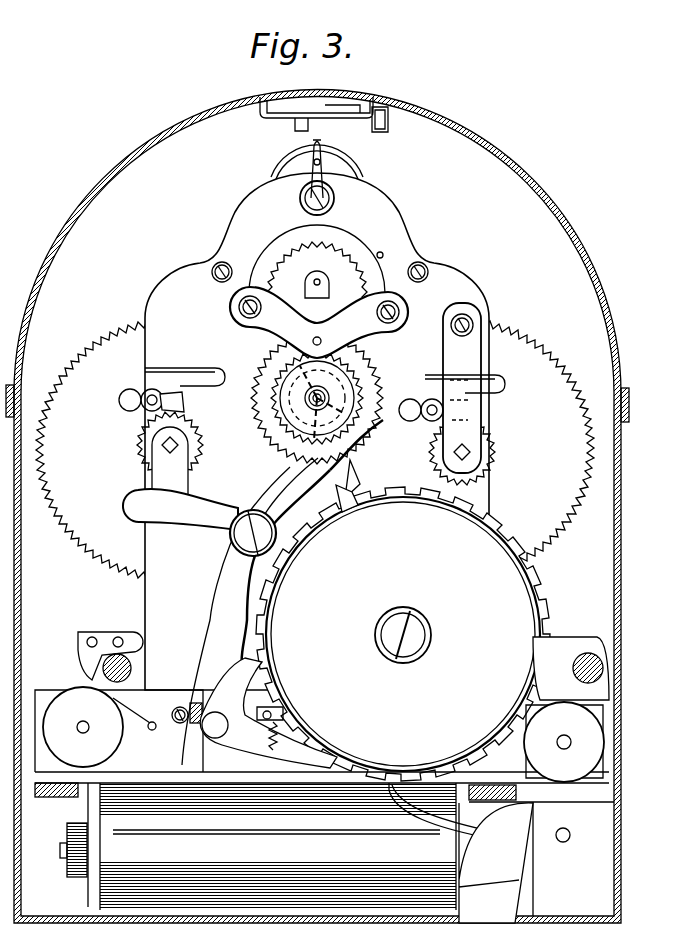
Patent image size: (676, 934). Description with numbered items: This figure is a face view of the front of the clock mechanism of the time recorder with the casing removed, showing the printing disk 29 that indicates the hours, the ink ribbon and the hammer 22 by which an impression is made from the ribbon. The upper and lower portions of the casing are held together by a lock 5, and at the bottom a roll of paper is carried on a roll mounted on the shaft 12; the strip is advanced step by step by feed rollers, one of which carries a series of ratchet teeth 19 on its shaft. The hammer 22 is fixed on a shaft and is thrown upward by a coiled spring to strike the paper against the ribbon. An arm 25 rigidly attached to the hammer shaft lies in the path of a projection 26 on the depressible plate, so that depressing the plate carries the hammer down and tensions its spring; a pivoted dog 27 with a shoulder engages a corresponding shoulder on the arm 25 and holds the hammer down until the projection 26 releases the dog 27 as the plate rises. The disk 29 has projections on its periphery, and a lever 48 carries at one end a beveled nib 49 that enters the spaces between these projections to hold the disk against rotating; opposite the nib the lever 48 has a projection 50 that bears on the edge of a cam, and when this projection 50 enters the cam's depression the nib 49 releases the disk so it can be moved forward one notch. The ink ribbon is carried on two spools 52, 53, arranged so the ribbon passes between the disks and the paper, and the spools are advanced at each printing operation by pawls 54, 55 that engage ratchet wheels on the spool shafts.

The lock 5 is at (355, 121).
The shaft 12 is at (67, 863).
The ratchet teeth 19 is at (67, 835).
The hammer 22 is at (437, 810).
The arm 25 is at (496, 863).
The projection 26 is at (488, 827).
The dog 27 is at (526, 805).
The disk 29 is at (403, 634).
The lever 48 is at (256, 611).
The nib 49 is at (345, 498).
The projection 50 is at (356, 458).
The spool 52 is at (83, 727).
The spool 53 is at (564, 742).
The pawl 54 is at (152, 762).
The pawl 55 is at (550, 741).